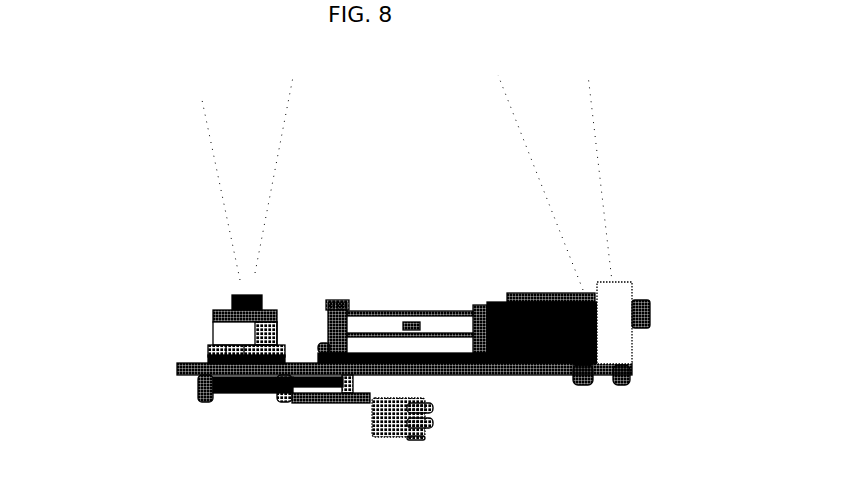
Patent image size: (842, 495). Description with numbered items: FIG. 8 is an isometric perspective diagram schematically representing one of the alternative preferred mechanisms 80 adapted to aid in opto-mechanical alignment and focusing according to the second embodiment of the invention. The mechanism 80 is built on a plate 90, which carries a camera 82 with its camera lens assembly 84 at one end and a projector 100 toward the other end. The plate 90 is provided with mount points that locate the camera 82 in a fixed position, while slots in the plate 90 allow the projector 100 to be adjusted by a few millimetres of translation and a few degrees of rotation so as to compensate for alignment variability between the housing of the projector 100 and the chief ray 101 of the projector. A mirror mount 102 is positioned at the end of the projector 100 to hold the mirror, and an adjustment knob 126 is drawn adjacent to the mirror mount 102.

The mechanism 80 is at (417, 257).
The camera 82 is at (228, 304).
The camera lens assembly 84 is at (267, 305).
The plate 90 is at (177, 371).
The projector 100 is at (550, 342).
The chief ray 101 is at (539, 289).
The mirror mount 102 is at (632, 349).
The knob 126 is at (650, 310).